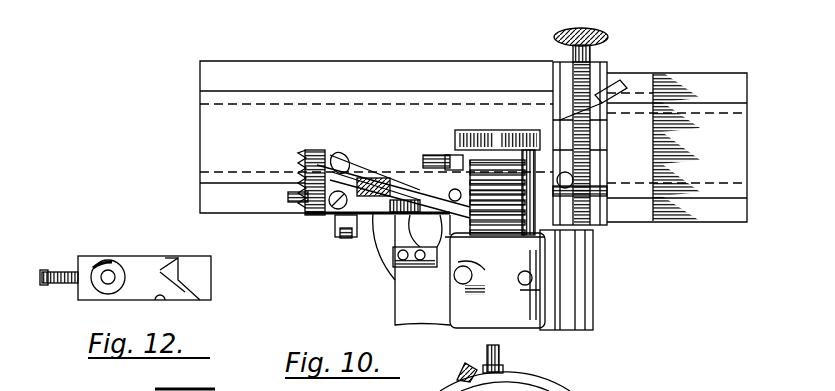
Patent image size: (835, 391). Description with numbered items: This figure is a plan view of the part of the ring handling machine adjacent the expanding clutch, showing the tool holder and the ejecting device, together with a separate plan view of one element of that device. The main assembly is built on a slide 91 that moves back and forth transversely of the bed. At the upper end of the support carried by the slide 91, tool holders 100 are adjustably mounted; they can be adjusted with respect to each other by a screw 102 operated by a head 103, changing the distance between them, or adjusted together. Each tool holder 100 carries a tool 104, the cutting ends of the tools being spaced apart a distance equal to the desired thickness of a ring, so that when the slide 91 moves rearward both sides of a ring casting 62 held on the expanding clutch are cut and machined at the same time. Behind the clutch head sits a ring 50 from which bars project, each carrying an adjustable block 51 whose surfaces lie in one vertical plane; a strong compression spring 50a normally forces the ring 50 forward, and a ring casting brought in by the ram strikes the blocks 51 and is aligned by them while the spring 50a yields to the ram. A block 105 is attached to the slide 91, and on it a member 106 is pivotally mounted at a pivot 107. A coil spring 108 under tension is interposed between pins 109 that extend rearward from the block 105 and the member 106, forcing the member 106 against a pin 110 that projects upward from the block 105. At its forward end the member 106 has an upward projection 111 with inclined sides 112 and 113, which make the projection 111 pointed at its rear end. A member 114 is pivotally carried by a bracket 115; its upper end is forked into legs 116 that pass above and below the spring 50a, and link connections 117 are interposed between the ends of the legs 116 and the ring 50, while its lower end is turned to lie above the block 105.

In FIG. 10, the slide 91 is at (225, 198).
In FIG. 10, the tool holders 100 is at (595, 78).
In FIG. 10, the screw 102 is at (653, 133).
In FIG. 10, the head 103 is at (610, 40).
In FIG. 10, the tool 104 is at (683, 83).
In FIG. 10, the block 105 is at (345, 165).
In FIG. 10, the member 106 is at (322, 217).
In FIG. 12, the member 106 is at (140, 283).
In FIG. 10, the pivot 107 is at (338, 215).
In FIG. 10, the coil spring 108 is at (322, 166).
In FIG. 10, the pins 109 is at (318, 150).
In FIG. 12, the pins 109 is at (65, 283).
In FIG. 10, the pin 110 is at (366, 220).
In FIG. 10, the upward projection 111 is at (380, 238).
In FIG. 12, the upward projection 111 is at (205, 282).
In FIG. 12, the inclined side 112 is at (185, 290).
In FIG. 12, the inclined side 113 is at (167, 258).
In FIG. 10, the member 114 is at (418, 205).
In FIG. 10, the bracket 115 is at (437, 232).
In FIG. 10, the legs 116 is at (450, 235).
In FIG. 10, the link connections 117 is at (488, 172).
In FIG. 10, the ring 50 is at (558, 243).
In FIG. 10, the compression spring 50a is at (540, 258).
In FIG. 10, the adjustable block 51 is at (505, 165).
In FIG. 10, the ring casting 62 is at (455, 135).